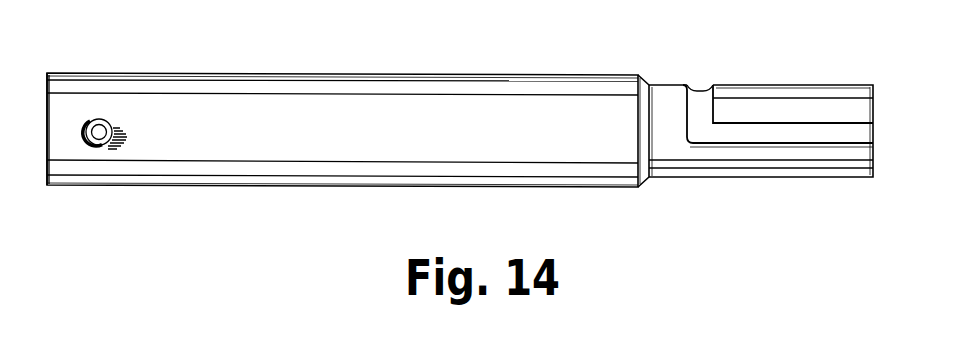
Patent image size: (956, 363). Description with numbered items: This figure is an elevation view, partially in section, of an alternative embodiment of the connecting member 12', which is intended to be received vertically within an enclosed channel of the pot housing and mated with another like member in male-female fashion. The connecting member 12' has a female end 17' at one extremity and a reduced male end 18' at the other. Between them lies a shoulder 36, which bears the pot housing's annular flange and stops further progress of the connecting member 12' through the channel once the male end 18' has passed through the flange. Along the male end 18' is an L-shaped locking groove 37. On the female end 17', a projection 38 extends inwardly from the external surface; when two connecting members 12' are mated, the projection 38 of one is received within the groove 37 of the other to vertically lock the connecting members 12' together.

The connecting member 12' is at (342, 114).
The female end 17' is at (61, 113).
The projection 38 is at (97, 118).
The shoulder 36 is at (645, 183).
The male end 18' is at (761, 149).
The L-shaped locking groove 37 is at (747, 127).